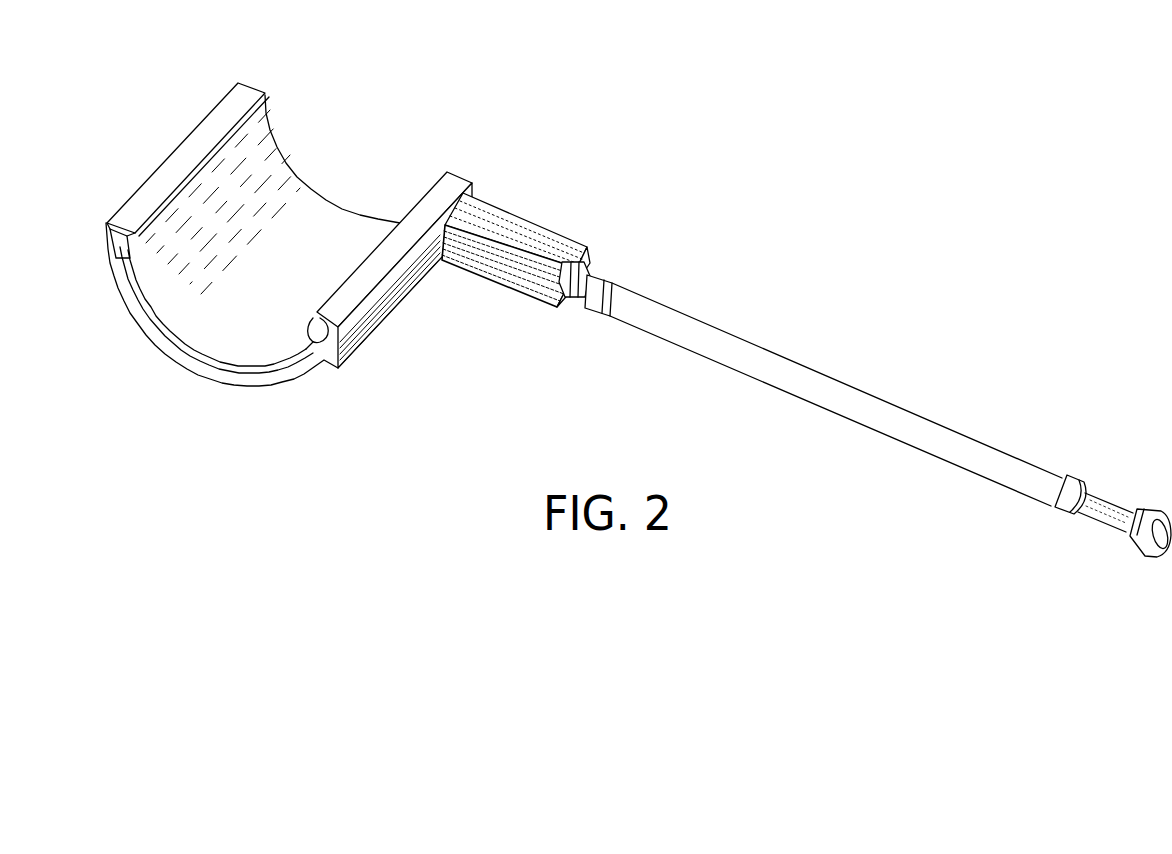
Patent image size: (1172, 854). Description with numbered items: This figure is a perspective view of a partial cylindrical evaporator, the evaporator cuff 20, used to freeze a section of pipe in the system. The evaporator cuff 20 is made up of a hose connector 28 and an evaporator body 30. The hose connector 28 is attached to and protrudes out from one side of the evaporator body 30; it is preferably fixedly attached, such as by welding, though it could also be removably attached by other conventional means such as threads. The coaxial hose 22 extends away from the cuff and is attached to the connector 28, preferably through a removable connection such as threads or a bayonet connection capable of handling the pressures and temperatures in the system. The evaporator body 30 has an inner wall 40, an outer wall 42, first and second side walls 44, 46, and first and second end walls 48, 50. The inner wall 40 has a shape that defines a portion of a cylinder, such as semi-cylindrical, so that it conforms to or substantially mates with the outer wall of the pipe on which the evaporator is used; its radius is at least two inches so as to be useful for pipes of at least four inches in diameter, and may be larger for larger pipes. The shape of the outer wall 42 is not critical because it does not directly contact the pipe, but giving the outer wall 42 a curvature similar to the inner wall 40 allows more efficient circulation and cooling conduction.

The evaporator cuff 20 is at (399, 68).
The coaxial hose 22 is at (983, 443).
The hose connector 28 is at (527, 235).
The evaporator body 30 is at (176, 387).
The inner wall 40 is at (269, 168).
The outer wall 42 is at (300, 385).
The first side wall 44 is at (128, 288).
The second side wall 46 is at (328, 204).
The first end wall 48 is at (355, 290).
The second end wall 50 is at (183, 158).